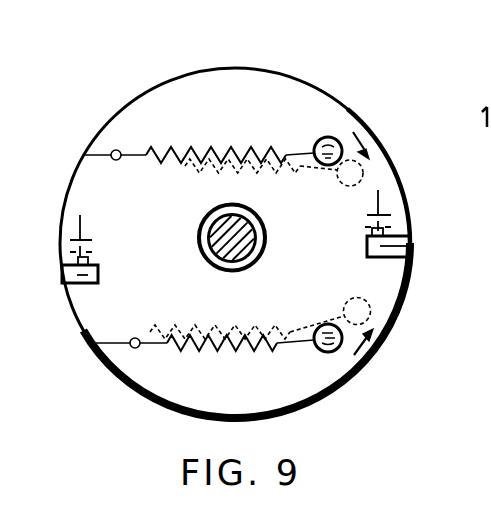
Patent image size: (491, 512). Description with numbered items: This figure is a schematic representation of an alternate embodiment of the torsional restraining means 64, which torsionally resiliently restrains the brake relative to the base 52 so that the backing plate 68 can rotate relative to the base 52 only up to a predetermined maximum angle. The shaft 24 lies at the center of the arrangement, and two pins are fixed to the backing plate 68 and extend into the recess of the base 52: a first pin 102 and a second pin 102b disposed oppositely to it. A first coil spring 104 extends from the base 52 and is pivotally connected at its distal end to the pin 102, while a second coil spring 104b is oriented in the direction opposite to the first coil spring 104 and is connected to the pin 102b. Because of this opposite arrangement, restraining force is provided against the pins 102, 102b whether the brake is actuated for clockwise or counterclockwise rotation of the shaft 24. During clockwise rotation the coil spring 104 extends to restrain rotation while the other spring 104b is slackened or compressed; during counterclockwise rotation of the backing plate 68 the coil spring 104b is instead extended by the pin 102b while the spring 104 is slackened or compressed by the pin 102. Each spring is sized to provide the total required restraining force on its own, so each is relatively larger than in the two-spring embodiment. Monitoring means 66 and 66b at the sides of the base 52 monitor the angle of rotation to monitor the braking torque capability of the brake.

The base 52 is at (138, 95).
The torsional restraining means 64 is at (279, 111).
The shaft 24 is at (250, 221).
The coil spring 104b is at (204, 146).
The pin 102b is at (331, 137).
The monitoring means 66b is at (407, 213).
The monitoring means 66 is at (58, 239).
The coil spring 104 is at (258, 344).
The pin 102 is at (335, 348).
The backing plate 68 is at (214, 394).